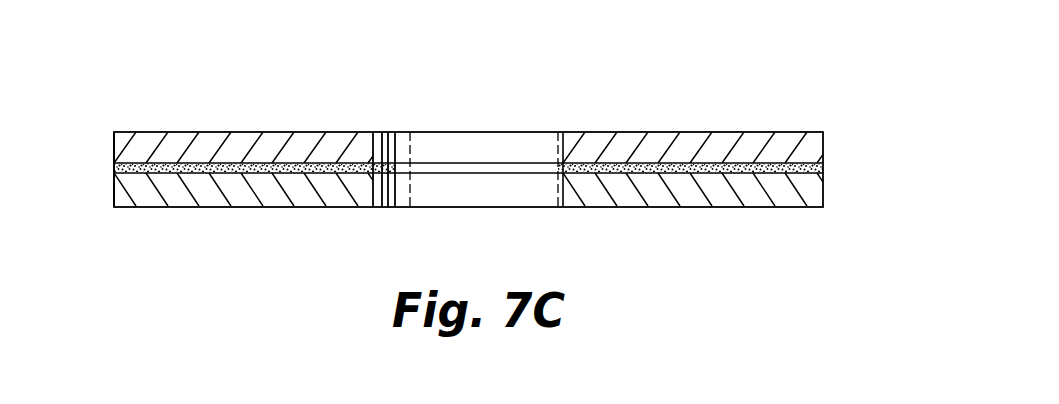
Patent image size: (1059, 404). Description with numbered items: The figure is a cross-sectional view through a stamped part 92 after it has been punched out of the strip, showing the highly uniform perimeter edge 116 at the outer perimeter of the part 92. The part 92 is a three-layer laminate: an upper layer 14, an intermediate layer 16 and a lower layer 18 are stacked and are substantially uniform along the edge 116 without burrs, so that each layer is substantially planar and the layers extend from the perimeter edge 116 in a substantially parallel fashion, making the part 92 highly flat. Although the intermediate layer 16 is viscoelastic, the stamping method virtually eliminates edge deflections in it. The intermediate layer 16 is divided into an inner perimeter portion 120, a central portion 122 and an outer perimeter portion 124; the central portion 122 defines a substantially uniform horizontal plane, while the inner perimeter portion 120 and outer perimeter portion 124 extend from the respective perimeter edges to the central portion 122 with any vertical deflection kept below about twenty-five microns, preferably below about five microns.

The part 92 is at (747, 63).
The upper layer 14 is at (655, 143).
The intermediate layer 16 is at (115, 167).
The lower layer 18 is at (653, 197).
The perimeter edge 116 is at (833, 135).
The inner perimeter portion 120 is at (373, 212).
The central portion 122 is at (322, 212).
The outer perimeter portion 124 is at (155, 212).